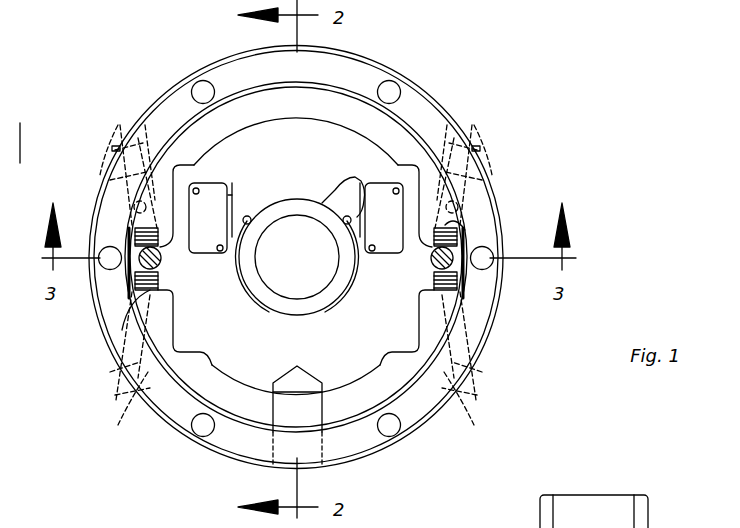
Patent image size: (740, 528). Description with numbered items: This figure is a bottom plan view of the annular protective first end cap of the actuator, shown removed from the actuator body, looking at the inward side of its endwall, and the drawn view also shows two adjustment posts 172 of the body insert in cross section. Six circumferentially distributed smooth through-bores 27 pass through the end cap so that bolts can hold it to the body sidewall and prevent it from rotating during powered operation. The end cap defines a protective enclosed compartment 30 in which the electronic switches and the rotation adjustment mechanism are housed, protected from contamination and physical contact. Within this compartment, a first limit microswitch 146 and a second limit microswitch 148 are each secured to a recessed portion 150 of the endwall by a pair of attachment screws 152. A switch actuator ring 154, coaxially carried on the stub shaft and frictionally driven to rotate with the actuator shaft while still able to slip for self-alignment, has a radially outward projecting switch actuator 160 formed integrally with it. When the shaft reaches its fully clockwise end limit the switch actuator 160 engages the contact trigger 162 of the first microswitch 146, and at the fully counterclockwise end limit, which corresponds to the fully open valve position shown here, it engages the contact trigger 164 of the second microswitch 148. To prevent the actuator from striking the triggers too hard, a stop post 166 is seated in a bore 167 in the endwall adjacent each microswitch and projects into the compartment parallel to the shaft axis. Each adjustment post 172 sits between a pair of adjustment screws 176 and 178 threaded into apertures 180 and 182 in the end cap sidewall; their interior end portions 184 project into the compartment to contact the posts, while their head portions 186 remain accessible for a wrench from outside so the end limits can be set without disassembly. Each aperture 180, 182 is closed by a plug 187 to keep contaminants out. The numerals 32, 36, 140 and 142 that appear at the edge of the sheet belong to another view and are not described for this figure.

The through-bores 27 is at (492, 257).
The protective enclosed compartment 30 is at (388, 345).
The body 32 is at (594, 511).
The fitting 36 is at (538, 514).
The shaft 140 is at (720, 511).
The conduit 142 is at (505, 525).
The first limit microswitch 146 is at (212, 188).
The second limit microswitch 148 is at (384, 152).
The recessed portion 150 is at (300, 130).
The attachment screws 152 is at (197, 187).
The switch actuator ring 154 is at (303, 314).
The switch actuator 160 is at (342, 187).
The contact trigger 162 is at (236, 195).
The contact trigger 164 is at (363, 190).
The stop post 166 is at (262, 238).
The bore 167 is at (266, 311).
The adjustment posts 172 is at (140, 268).
The adjustment screw 176 is at (160, 240).
The adjustment screw 178 is at (122, 330).
The threaded aperture 180 is at (112, 152).
The threaded aperture 182 is at (118, 370).
The interior end portion 184 is at (163, 252).
The head portion 186 is at (110, 180).
The plug 187 is at (137, 140).